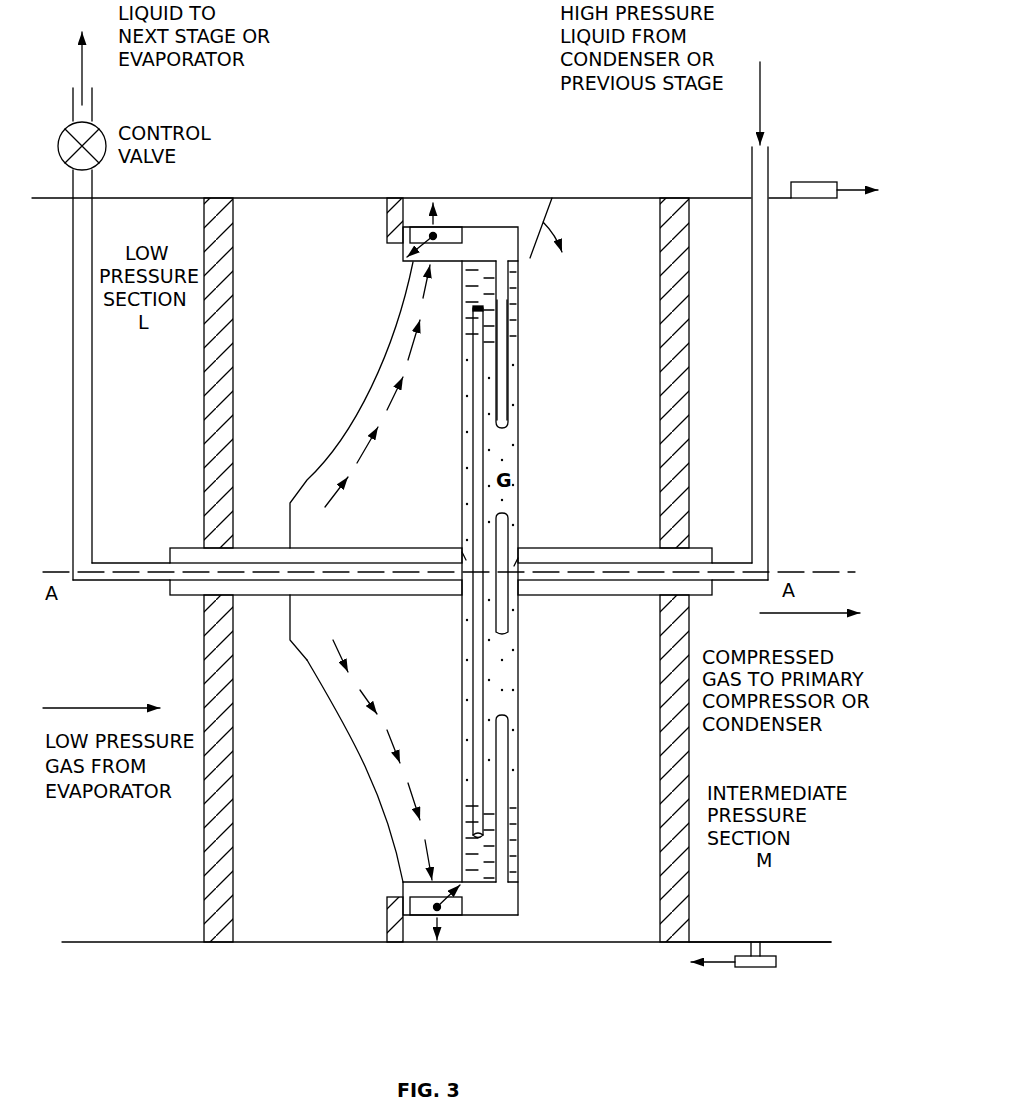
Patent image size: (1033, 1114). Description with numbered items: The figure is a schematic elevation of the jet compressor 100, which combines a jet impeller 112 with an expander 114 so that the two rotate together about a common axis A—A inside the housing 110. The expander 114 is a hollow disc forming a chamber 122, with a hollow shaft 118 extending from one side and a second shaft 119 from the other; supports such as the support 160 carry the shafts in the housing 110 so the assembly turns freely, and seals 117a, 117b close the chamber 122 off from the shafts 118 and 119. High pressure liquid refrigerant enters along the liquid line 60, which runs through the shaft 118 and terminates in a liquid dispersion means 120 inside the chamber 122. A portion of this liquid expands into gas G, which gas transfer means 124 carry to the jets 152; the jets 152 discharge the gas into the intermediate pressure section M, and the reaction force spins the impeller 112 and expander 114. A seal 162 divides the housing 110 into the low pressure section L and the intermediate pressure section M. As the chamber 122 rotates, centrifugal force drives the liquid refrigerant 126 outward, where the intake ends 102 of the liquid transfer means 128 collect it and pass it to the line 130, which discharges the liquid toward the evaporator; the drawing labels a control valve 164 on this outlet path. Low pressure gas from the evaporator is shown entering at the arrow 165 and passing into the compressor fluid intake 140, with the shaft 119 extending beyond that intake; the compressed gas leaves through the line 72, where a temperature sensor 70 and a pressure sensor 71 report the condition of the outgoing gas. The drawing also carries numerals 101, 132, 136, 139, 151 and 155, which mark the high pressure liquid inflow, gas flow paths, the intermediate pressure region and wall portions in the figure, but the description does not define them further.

The liquid line 60 is at (770, 372).
The temperature sensor 70 is at (812, 182).
The pressure sensor 71 is at (760, 968).
The line 72 is at (810, 628).
The jet compressor 100 is at (528, 152).
The liquid flow 101 is at (552, 198).
The intake ends 102 is at (475, 825).
The housing 110 is at (793, 290).
The jet impeller 112 is at (360, 738).
The expander 114 is at (518, 747).
The seal 117a is at (460, 552).
The seal 117b is at (520, 560).
The hollow shaft 118 is at (640, 548).
The shaft 119 is at (193, 597).
The liquid dispersion means 120 is at (515, 523).
The chamber 122 is at (500, 452).
The gas transfer means 124 is at (512, 380).
The liquid refrigerant 126 is at (512, 302).
The liquid transfer means 128 is at (463, 705).
The line 130 is at (158, 584).
The upper partition with flow arrows 132 is at (390, 403).
The gas flow arrows 136 is at (472, 835).
The intermediate pressure chamber 139 is at (612, 890).
The compressor fluid intake 140 is at (290, 627).
The flow arrow 151 is at (402, 253).
The jets 152 is at (443, 227).
The wall 155 is at (690, 353).
The support 160 is at (205, 892).
The seal 162 is at (402, 198).
The control valve 164 is at (93, 122).
The low pressure gas flow 165 is at (101, 693).